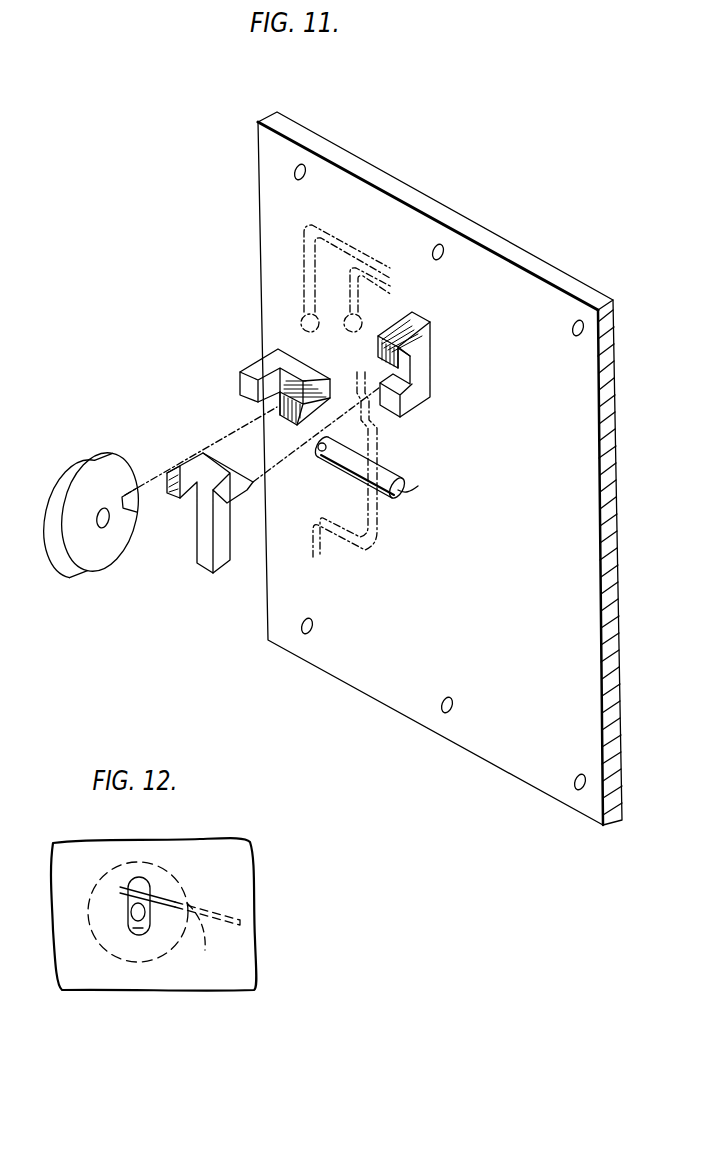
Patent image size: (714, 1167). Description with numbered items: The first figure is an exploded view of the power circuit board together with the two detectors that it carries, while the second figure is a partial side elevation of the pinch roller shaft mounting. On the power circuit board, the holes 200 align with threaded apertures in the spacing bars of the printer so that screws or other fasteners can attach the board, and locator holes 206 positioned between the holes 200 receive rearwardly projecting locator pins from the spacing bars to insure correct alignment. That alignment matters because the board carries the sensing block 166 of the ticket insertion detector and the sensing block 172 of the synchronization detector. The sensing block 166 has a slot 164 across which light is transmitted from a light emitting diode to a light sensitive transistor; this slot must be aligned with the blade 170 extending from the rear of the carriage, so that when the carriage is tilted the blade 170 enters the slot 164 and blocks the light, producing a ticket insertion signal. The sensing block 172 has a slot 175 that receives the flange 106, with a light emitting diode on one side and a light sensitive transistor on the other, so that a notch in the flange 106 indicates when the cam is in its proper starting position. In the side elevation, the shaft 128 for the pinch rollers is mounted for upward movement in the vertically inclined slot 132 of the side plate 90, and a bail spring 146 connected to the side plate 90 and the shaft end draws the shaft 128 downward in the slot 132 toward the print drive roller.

In FIG. 11, the holes 200 is at (306, 165).
In FIG. 11, the locator holes 206 is at (442, 245).
In FIG. 11, the sensing block 172 is at (256, 369).
In FIG. 11, the slot 164 is at (383, 372).
In FIG. 11, the sensing block 166 is at (428, 342).
In FIG. 11, the flange 106 is at (83, 475).
In FIG. 11, the blade 170 is at (237, 478).
In FIG. 11, the slot 175 is at (273, 413).
In FIG. 12, the side plate 90 is at (230, 861).
In FIG. 12, the shaft 128 is at (130, 916).
In FIG. 12, the slot 132 is at (147, 934).
In FIG. 12, the bail spring 146 is at (207, 941).